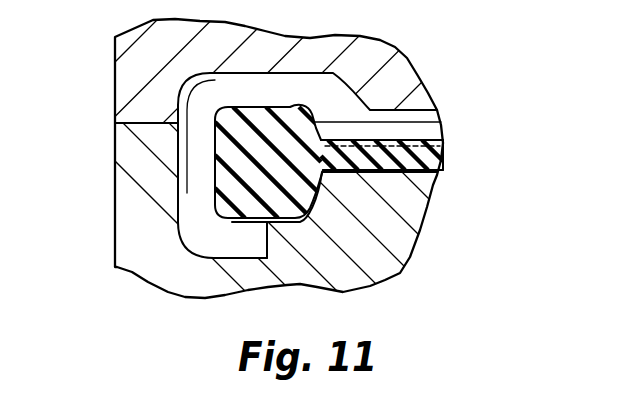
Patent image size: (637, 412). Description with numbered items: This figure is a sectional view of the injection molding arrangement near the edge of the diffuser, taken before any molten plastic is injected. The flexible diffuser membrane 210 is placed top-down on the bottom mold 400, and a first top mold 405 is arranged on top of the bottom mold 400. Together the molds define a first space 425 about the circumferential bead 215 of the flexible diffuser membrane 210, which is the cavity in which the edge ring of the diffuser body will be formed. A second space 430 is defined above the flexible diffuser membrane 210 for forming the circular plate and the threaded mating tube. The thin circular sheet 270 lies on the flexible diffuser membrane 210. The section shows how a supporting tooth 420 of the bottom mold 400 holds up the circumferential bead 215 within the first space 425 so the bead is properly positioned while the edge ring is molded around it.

The bottom mold 400 is at (115, 230).
The first top mold 405 is at (115, 88).
The first space 425 is at (247, 105).
The second space 430 is at (414, 133).
The thin circular sheet 270 is at (447, 142).
The flexible diffuser membrane 210 is at (442, 171).
The circumferential bead 215 is at (232, 223).
The supporting teeth 420 is at (271, 223).